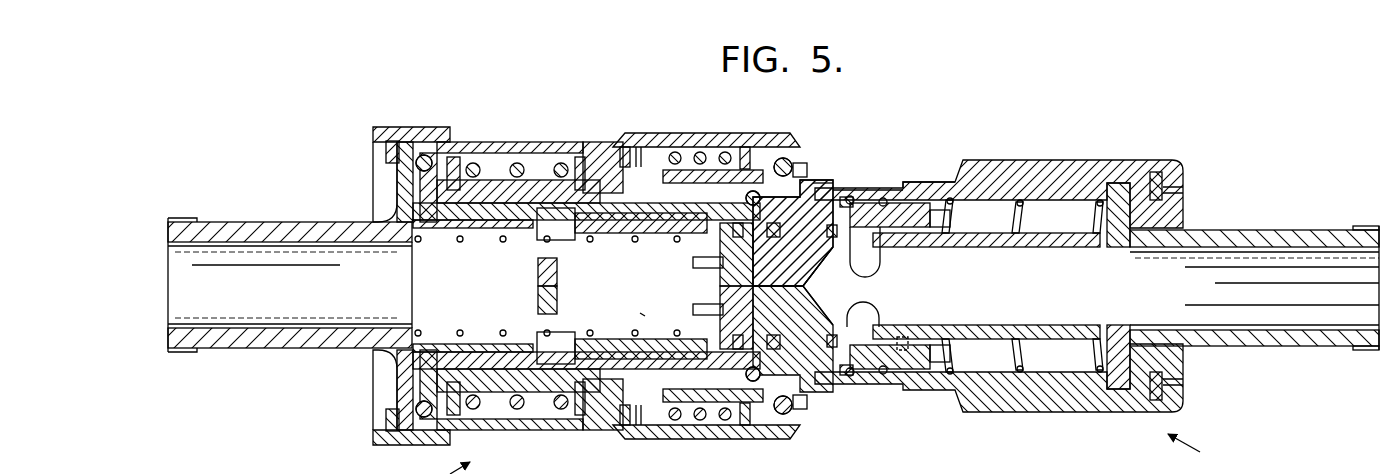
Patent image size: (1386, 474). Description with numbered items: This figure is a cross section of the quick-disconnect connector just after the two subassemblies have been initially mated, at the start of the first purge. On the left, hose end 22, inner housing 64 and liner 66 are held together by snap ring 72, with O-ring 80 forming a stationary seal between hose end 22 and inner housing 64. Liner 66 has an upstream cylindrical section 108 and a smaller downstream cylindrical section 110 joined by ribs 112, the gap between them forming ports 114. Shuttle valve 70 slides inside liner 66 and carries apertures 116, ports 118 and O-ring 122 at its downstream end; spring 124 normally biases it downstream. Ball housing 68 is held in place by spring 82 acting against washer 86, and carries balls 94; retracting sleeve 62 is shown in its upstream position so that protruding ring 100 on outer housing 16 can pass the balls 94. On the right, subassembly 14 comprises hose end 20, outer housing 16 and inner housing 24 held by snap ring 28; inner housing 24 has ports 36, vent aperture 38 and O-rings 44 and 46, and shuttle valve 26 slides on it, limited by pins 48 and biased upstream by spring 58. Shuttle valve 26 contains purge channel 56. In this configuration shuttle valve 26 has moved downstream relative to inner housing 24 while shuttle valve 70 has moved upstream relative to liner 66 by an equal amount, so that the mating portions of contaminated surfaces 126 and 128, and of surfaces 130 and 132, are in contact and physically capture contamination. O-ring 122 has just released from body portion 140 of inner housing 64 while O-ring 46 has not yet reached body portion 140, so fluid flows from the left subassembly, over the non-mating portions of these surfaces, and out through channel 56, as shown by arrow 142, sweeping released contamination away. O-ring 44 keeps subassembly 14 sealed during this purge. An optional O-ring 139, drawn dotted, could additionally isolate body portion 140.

The subassembly 14 is at (1205, 452).
The outer housing 16 is at (1060, 175).
The hose end 20 is at (1312, 348).
The hose end 22 is at (225, 350).
The inner housing 24 is at (1008, 242).
The shuttle valve 26 is at (845, 175).
The snap ring 28 is at (1175, 188).
The ports 36 is at (863, 255).
The aperture 38 is at (1112, 247).
The O-ring 44 is at (848, 375).
The O-ring 46 is at (815, 272).
The pins 48 is at (940, 228).
The channel 56 is at (773, 205).
The spring 58 is at (1024, 212).
The retracting sleeve 62 is at (690, 133).
The inner housing 64 is at (640, 382).
The liner 66 is at (487, 229).
The ball housing 68 is at (600, 160).
The shuttle valve 70 is at (640, 313).
The snap ring 72 is at (388, 150).
The O-ring 80 is at (418, 167).
The spring 82 is at (520, 163).
The washer 86 is at (455, 158).
The balls 94 is at (800, 158).
The protruding ring 100 is at (920, 180).
The upstream cylindrical section 108 is at (286, 267).
The downstream cylindrical section 110 is at (594, 234).
The ribs 112 is at (565, 366).
The ports 114 is at (541, 236).
The apertures 116 is at (560, 300).
The ports 118 is at (693, 262).
The O-ring 122 is at (720, 262).
The spring 124 is at (470, 320).
The surface 126 is at (805, 300).
The surface 128 is at (700, 316).
The surface 130 is at (775, 365).
The surface 132 is at (773, 350).
The O-ring 139 is at (910, 337).
The body portion 140 is at (750, 380).
The arrow 142 is at (830, 185).